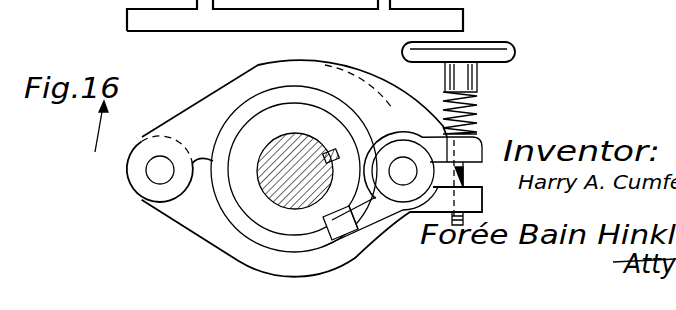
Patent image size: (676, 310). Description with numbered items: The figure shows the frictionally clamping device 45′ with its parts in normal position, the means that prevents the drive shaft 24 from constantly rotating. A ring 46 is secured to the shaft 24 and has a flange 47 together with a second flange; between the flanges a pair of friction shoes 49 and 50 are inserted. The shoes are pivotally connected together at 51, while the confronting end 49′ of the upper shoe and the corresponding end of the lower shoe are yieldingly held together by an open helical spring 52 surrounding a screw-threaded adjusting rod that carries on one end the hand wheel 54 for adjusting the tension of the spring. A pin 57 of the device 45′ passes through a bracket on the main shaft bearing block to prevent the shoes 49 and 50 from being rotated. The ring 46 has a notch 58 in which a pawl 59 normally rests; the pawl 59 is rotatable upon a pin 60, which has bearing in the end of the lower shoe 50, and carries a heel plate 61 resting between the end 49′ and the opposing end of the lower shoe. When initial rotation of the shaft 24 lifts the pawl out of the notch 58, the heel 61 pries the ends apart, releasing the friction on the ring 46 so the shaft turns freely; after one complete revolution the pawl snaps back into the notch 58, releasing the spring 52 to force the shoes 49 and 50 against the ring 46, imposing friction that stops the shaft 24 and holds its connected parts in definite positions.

The drive shaft 24 is at (296, 143).
The ring 46 is at (265, 115).
The flange 47 is at (330, 100).
The friction shoe 49 is at (203, 110).
The confronting end of the shoe 49′ is at (478, 135).
The friction shoe 50 is at (183, 215).
The pivotal connection 51 is at (128, 172).
The open helical spring 52 is at (475, 96).
The hand wheel 54 is at (492, 43).
The pin 57 is at (160, 172).
The notch 58 is at (360, 228).
The pawl 59 is at (358, 213).
The pin 60 is at (404, 168).
The heel plate 61 is at (464, 170).
The frictionally clamping device 45′ is at (85, 128).